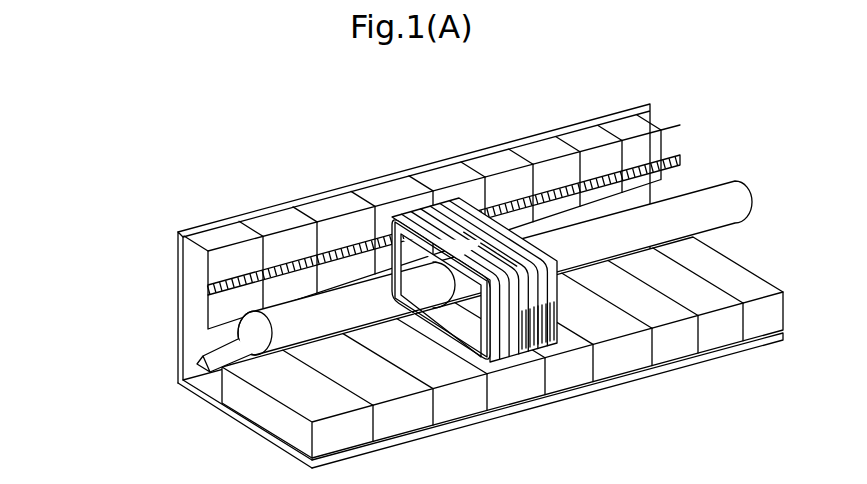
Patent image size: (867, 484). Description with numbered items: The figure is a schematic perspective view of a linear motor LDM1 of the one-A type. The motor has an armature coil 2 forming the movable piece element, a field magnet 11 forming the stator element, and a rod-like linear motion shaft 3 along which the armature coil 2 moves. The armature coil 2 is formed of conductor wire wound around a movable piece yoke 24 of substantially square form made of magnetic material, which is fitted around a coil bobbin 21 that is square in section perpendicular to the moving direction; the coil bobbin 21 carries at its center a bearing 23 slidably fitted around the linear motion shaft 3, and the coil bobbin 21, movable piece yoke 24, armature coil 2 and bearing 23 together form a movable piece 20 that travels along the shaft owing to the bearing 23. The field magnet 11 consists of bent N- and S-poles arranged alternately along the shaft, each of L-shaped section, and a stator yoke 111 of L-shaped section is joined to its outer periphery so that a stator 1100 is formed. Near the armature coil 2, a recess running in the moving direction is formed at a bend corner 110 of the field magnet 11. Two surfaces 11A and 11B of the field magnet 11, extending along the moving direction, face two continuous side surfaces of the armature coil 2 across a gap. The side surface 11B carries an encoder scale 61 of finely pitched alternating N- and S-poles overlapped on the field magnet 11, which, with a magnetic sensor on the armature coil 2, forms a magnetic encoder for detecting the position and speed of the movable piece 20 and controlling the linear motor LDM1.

The linear motor LDM1 is at (267, 158).
The stator 1100 is at (195, 215).
The field magnet 11 is at (193, 262).
The surface of the field magnet 11A is at (295, 400).
The side surface of the field magnet 11B is at (210, 312).
The bend corner 110 is at (203, 361).
The stator yoke 111 is at (213, 410).
The movable piece 20 is at (513, 192).
The encoder scale 61 is at (607, 175).
The armature coil 2 is at (460, 208).
The coil bobbin 21 is at (505, 330).
The bearing 23 is at (482, 340).
The movable piece yoke 24 is at (515, 322).
The linear motion shaft 3 is at (723, 208).